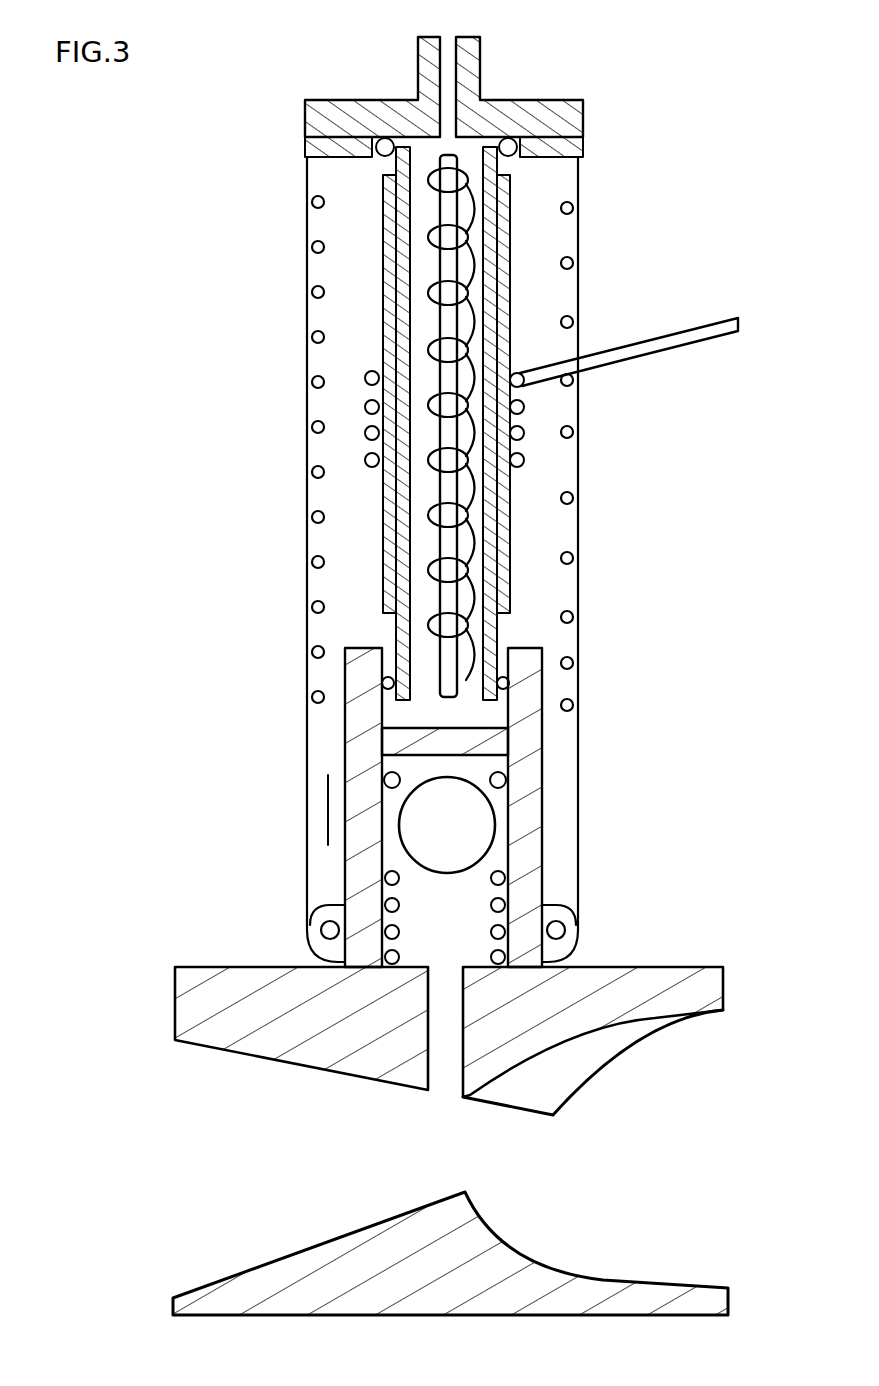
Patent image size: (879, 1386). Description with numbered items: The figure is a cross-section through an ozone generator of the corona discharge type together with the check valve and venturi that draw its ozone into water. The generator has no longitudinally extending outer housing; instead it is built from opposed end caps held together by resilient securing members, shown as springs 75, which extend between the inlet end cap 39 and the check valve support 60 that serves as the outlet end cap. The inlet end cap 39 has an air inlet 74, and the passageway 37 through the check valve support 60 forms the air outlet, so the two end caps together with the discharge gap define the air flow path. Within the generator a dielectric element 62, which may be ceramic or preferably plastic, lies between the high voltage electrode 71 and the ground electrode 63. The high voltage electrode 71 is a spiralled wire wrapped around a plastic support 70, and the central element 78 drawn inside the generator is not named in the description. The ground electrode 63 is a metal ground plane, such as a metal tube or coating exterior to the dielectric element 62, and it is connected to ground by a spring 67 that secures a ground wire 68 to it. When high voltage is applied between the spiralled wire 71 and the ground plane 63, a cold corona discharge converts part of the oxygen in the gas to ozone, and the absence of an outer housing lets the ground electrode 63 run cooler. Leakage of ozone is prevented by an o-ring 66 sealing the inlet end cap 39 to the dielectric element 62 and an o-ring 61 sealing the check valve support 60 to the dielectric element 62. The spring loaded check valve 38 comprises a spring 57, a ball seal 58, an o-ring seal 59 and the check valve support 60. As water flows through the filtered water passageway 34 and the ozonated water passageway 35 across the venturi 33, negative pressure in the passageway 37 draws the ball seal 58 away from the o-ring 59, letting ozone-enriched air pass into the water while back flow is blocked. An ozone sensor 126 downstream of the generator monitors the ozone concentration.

The venturi 33 is at (620, 985).
The filtered water passageway 34 is at (705, 1153).
The ozonated water passageway 35 is at (217, 1157).
The passageway 37 is at (440, 1072).
The spring loaded check valve 38 is at (328, 835).
The inlet end cap 39 is at (570, 124).
The spring 57 is at (540, 862).
The ball seal 58 is at (497, 800).
The o-ring seal 59 is at (507, 760).
The check valve support 60 is at (505, 742).
The o-ring 61 is at (520, 660).
The dielectric element 62 is at (500, 632).
The ground electrode 63 is at (515, 478).
The o-ring 66 is at (553, 103).
The spring 67 is at (524, 410).
The ground wire 68 is at (670, 318).
The plastic support 70 is at (440, 208).
The high voltage electrode 71 is at (472, 205).
The air inlet 74 is at (448, 38).
The springs 75 is at (305, 312).
The plunger rod 78 is at (420, 493).
The ozone sensor 126 is at (400, 727).